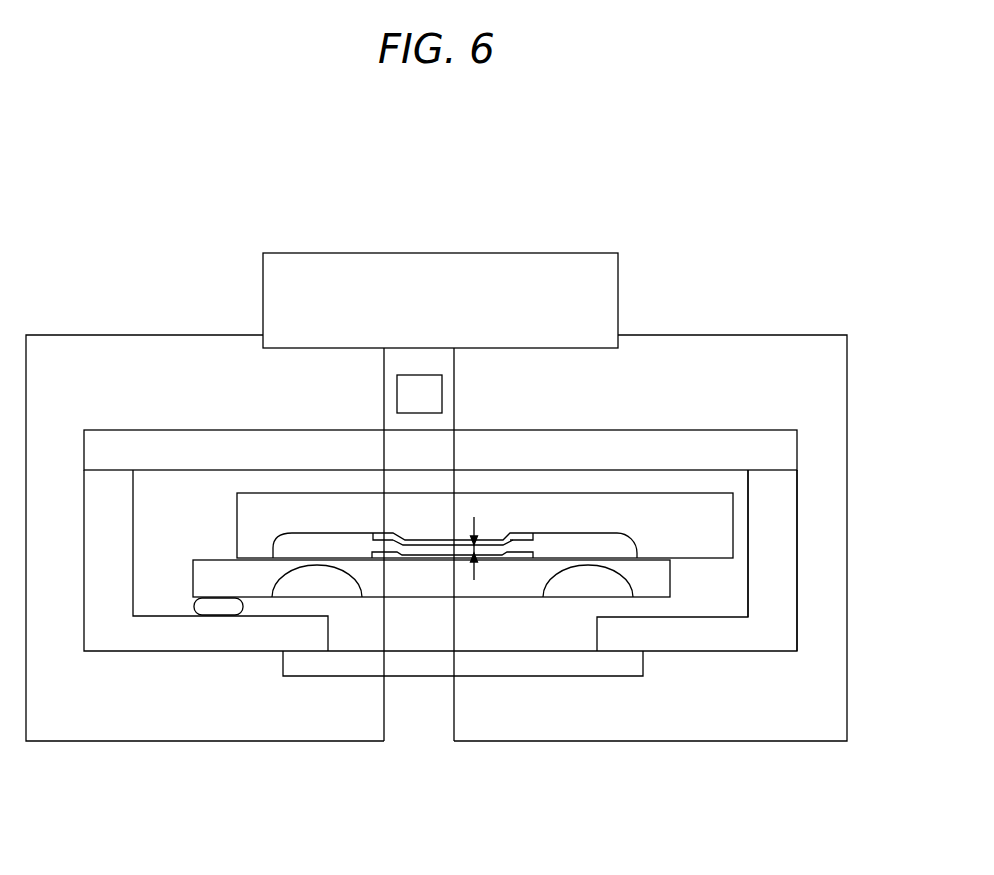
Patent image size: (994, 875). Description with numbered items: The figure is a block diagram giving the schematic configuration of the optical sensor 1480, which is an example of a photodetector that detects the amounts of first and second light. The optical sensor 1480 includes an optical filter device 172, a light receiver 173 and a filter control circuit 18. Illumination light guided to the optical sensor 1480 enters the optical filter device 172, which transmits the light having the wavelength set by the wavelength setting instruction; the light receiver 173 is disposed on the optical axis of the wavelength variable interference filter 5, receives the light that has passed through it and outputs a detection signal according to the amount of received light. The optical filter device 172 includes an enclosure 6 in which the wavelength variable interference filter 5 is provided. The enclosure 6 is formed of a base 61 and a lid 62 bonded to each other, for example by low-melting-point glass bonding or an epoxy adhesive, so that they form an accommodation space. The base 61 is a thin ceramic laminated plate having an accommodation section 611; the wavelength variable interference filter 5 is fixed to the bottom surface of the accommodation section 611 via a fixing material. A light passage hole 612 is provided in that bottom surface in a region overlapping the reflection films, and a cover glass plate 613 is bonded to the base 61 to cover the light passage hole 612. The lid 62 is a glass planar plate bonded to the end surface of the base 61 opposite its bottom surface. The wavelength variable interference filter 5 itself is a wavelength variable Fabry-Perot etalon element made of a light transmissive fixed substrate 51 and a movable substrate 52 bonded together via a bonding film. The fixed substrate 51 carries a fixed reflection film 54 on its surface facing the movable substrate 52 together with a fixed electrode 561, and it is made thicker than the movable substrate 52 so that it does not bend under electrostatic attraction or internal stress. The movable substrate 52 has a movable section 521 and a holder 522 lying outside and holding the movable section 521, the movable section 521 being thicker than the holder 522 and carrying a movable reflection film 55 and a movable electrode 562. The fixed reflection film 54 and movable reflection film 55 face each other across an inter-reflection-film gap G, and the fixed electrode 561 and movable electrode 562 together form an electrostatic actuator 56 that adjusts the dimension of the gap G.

The optical sensor 1480 is at (669, 161).
The filter control circuit 18 is at (592, 253).
The optical filter device 172 is at (727, 397).
The light receiver 173 is at (442, 391).
The enclosure 6 is at (416, 560).
The base 61 is at (77, 640).
The lid 62 is at (148, 443).
The accommodation section 611 is at (748, 583).
The light passage hole 612 is at (598, 678).
The cover glass plate 613 is at (341, 665).
The wavelength variable interference filter 5 is at (388, 514).
The fixed substrate 51 is at (595, 505).
The movable substrate 52 is at (356, 605).
The movable section 521 is at (490, 600).
The holder 522 is at (590, 570).
The fixed reflection film 54 is at (418, 538).
The movable reflection film 55 is at (425, 562).
The electrostatic actuator 56 is at (388, 520).
The fixed electrode 561 is at (378, 533).
The movable electrode 562 is at (378, 552).
The inter-reflection-film gap G is at (476, 537).